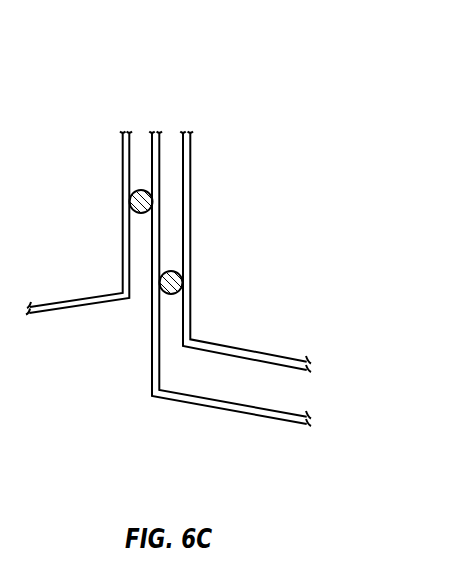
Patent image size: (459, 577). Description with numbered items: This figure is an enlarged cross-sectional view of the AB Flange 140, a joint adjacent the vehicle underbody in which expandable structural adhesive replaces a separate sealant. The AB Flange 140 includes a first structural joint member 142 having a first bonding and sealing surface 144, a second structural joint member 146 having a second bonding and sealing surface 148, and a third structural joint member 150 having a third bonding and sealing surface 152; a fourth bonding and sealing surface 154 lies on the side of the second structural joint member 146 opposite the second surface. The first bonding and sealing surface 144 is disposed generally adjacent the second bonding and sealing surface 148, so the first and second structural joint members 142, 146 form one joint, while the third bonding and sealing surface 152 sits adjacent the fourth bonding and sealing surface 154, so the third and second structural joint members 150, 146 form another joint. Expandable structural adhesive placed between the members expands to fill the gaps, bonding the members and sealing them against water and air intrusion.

The AB Flange 140 is at (253, 132).
The first structural joint member 142 is at (122, 198).
The first bonding and sealing surface 144 is at (127, 155).
The second structural joint member 146 is at (162, 207).
The second bonding and sealing surface 148 is at (149, 282).
The third structural joint member 150 is at (192, 283).
The third bonding and sealing surface 152 is at (184, 244).
The fourth bonding and sealing surface 154 is at (159, 245).